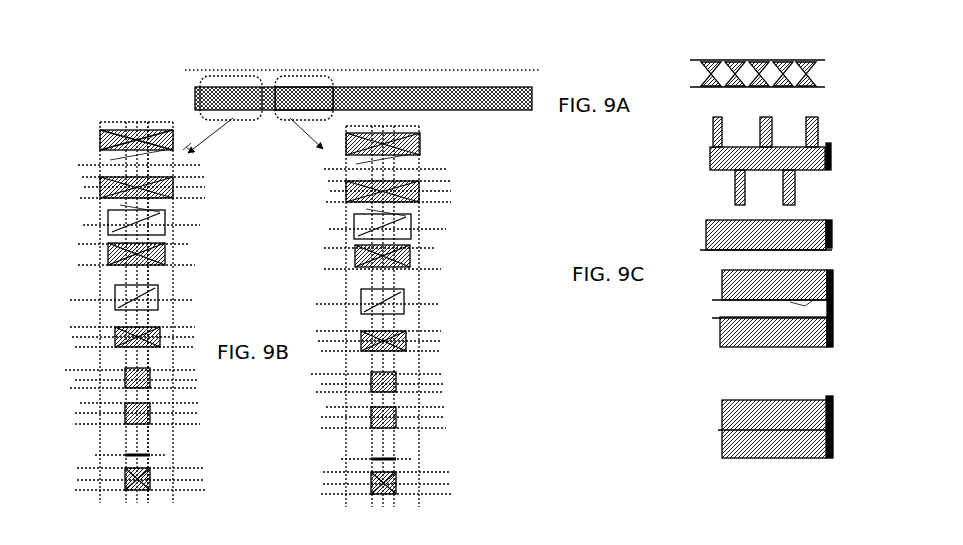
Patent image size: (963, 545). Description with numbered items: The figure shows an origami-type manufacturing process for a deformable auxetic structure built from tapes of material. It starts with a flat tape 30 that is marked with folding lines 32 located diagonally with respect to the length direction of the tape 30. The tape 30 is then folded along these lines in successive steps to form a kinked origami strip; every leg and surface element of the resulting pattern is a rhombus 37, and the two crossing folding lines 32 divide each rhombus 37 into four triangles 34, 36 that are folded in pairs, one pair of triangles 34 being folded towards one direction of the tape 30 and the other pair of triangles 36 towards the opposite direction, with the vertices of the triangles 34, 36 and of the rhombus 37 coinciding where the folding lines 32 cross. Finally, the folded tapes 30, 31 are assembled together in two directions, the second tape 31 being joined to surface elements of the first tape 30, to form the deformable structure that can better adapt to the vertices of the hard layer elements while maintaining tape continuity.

In FIG. 9A, the first tape of material 30 is at (458, 105).
In FIG. 9C, the second tape of material 31 is at (814, 128).
In FIG. 9A, the folding lines 32 is at (293, 102).
In FIG. 9B, the pair of triangles 34 is at (120, 130).
In FIG. 9B, the pair of triangles 36 is at (151, 130).
In FIG. 9B, the rhombus 37 is at (108, 256).